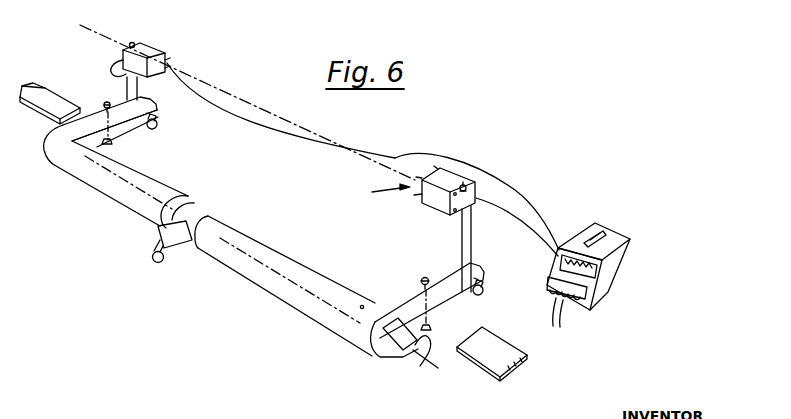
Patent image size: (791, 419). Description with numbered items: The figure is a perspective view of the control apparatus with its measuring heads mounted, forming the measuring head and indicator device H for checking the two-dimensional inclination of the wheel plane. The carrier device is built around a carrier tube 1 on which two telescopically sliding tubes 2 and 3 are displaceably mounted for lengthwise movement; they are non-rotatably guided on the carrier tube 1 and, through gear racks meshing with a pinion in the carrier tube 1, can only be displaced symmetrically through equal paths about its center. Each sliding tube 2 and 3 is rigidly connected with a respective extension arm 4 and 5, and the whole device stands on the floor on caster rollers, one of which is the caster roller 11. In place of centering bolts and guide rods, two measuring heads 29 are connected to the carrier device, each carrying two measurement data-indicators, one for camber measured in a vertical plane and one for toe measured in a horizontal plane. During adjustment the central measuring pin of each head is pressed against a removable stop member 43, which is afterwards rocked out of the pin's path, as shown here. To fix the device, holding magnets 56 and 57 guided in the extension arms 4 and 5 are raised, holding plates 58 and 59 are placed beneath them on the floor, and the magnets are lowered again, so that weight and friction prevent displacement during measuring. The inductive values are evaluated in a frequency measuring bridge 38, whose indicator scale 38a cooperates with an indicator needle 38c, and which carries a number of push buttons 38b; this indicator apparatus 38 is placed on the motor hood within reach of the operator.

The carrier tube 1 is at (200, 212).
The sliding tube 2 is at (158, 182).
The sliding tube 3 is at (285, 257).
The extension arm 4 is at (93, 112).
The extension arm 5 is at (408, 295).
The caster roller 11 is at (148, 253).
The measuring head 29 is at (151, 49).
The frequency measuring bridge 38 is at (614, 264).
The indicator scale 38a is at (572, 255).
The push buttons 38b is at (574, 326).
The indicator needle 38c is at (597, 277).
The stop member 43 is at (134, 44).
The holding magnet 56 is at (114, 143).
The holding magnet 57 is at (420, 366).
The holding plate 58 is at (53, 99).
The holding plate 59 is at (500, 341).
The measuring head and indicator device H is at (382, 190).